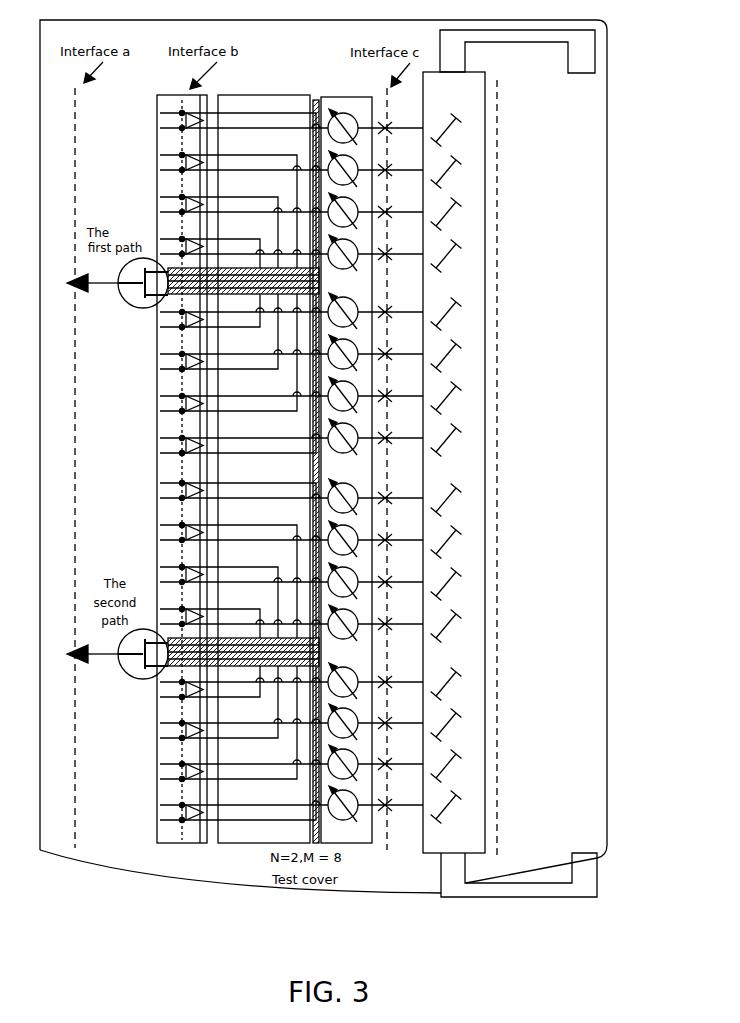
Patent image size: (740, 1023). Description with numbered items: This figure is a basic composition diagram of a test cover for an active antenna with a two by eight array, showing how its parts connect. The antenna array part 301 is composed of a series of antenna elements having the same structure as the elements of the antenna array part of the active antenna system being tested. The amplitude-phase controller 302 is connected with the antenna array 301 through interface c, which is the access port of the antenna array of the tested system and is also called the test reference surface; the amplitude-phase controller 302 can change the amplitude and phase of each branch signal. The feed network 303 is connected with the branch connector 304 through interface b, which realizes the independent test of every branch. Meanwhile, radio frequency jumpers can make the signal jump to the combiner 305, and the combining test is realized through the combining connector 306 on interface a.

The antenna array part 301 is at (498, 176).
The amplitude-phase controller 302 is at (360, 82).
The feed network 303 is at (246, 80).
The branch connector 304 is at (148, 143).
The combiner 305 is at (140, 312).
The combining connector 306 is at (92, 300).